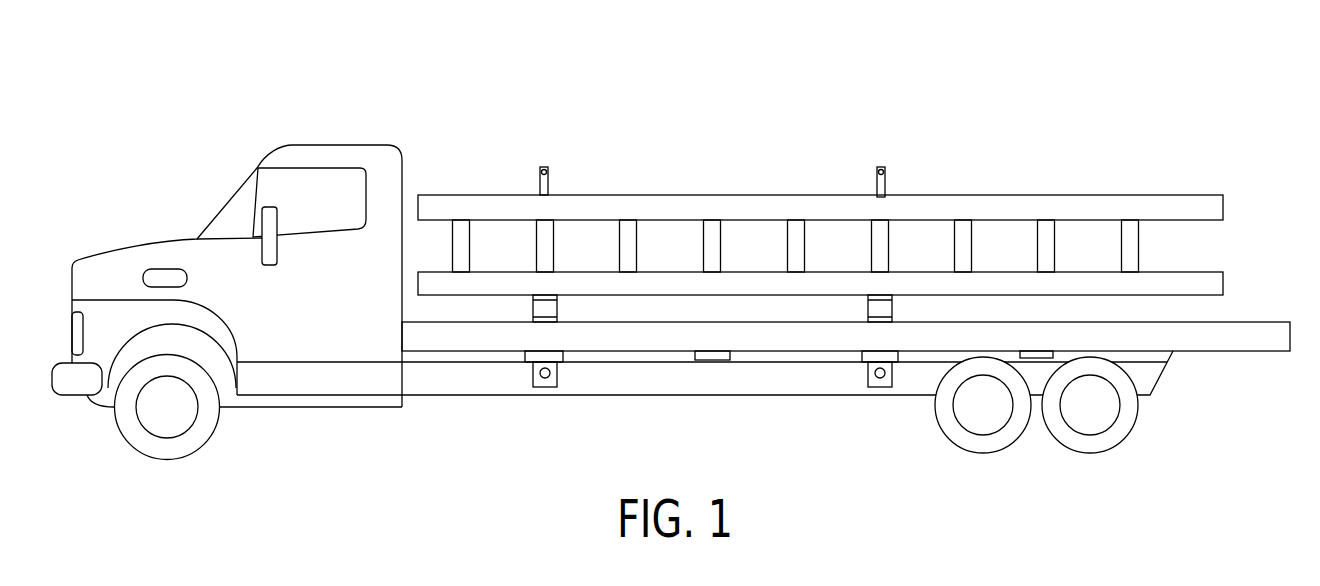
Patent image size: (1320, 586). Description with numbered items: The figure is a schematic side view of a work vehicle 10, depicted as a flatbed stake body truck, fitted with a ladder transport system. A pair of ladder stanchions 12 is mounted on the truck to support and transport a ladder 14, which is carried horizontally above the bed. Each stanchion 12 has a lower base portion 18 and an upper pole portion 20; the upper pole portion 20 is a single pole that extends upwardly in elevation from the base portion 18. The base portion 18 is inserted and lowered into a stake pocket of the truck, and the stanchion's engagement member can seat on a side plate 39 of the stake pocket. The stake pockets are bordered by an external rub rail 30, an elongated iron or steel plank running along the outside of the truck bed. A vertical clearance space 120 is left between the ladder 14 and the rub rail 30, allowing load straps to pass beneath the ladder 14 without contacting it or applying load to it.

The work vehicle 10 is at (412, 100).
The ladder stanchion 12 is at (720, 213).
The ladder 14 is at (707, 183).
The lower base portion 18 is at (545, 387).
The upper pole portion 20 is at (550, 182).
The rub rail 30 is at (1237, 338).
The side plate 39 is at (530, 353).
The vertical clearance space 120 is at (1207, 308).